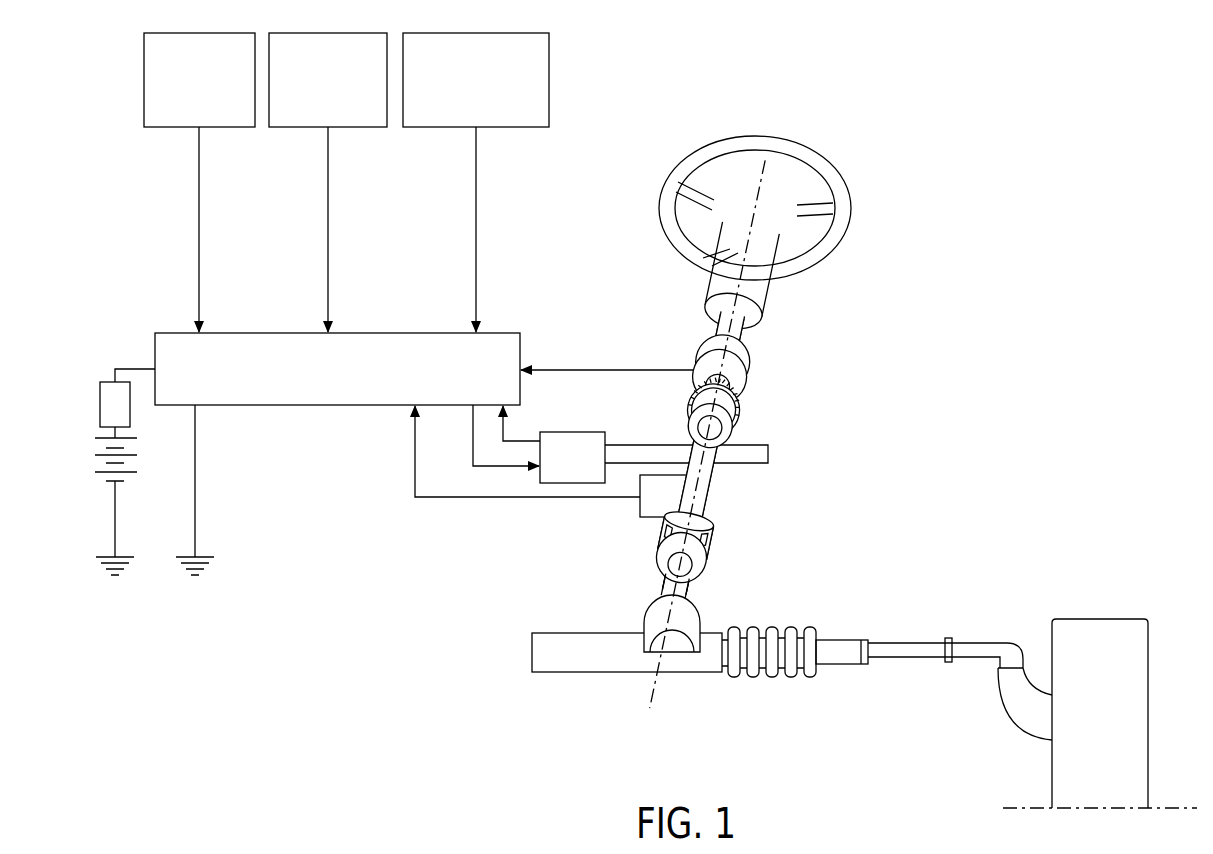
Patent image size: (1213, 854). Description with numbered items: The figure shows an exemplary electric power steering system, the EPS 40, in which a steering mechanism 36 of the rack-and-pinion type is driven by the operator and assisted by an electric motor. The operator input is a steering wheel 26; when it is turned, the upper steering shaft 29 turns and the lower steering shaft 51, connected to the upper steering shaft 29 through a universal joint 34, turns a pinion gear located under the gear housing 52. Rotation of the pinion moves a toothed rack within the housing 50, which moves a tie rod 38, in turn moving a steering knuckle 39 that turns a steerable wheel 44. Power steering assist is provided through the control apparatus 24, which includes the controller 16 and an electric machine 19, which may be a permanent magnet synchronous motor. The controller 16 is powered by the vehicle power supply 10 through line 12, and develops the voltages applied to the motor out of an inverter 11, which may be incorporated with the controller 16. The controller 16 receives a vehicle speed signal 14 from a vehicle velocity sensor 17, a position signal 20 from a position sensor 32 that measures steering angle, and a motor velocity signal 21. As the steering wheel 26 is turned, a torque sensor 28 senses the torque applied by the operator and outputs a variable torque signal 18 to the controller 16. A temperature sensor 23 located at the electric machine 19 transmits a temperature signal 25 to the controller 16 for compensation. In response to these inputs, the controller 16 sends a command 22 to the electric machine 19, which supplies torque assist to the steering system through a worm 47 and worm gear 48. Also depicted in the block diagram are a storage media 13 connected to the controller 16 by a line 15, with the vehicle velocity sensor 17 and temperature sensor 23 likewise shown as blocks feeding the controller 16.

The vehicle power supply 10 is at (100, 455).
The inverter 11 is at (100, 405).
The line 12 is at (130, 369).
The storage media 13 is at (163, 128).
The vehicle speed signal 14 is at (327, 258).
The storage media signal line 15 is at (198, 258).
The controller 16 is at (325, 405).
The vehicle velocity sensor 17 is at (276, 128).
The variable torque signal 18 is at (617, 370).
The electric machine 19 is at (585, 432).
The position signal 20 is at (530, 497).
The motor velocity signal 21 is at (500, 433).
The command 22 is at (488, 483).
The temperature sensor 23 is at (420, 128).
The control apparatus 24 is at (932, 353).
The temperature signal 25 is at (475, 258).
The steering wheel 26 is at (806, 160).
The torque sensor 28 is at (766, 368).
The upper steering shaft 29 is at (760, 318).
The position sensor 32 is at (640, 505).
The universal joint 34 is at (778, 540).
The steering mechanism 36 is at (795, 632).
The tie rod 38 is at (905, 660).
The steering knuckle 39 is at (1023, 702).
The EPS 40 is at (1010, 450).
The steerable wheel 44 is at (1088, 635).
The worm 47 is at (768, 455).
The worm gear 48 is at (770, 420).
The housing 50 is at (568, 672).
The lower steering shaft 51 is at (699, 579).
The gear housing 52 is at (655, 618).